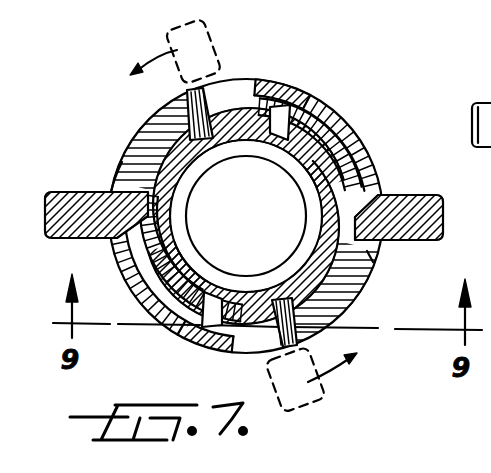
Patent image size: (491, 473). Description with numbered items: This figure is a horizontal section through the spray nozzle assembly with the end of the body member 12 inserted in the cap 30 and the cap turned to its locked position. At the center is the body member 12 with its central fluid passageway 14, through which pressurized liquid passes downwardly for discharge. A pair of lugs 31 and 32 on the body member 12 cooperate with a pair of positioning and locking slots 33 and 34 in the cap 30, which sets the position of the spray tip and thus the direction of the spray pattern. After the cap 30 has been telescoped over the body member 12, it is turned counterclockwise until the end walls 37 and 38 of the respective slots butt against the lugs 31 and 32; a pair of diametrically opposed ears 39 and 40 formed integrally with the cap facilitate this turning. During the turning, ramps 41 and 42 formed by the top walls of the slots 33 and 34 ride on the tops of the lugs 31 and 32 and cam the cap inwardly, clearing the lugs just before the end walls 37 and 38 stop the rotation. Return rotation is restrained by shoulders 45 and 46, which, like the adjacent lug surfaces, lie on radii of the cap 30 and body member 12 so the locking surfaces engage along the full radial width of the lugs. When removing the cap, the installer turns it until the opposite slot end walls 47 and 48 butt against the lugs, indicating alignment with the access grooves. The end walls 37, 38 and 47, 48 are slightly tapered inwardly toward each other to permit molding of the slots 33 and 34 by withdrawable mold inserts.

The main body member 12 is at (345, 126).
The central fluid passageway 14 is at (358, 163).
The cap 30 is at (332, 101).
The lug 31 is at (240, 82).
The lug 32 is at (240, 356).
The positioning and locking slot 33 is at (143, 137).
The positioning and locking slot 34 is at (343, 287).
The slot end wall 37 is at (284, 74).
The slot end wall 38 is at (220, 355).
The ear 39 is at (90, 245).
The ear 40 is at (446, 206).
The ramp 41 is at (180, 118).
The ramp 42 is at (312, 305).
The shoulder 45 is at (214, 92).
The shoulder 46 is at (314, 335).
The slot end wall 47 is at (120, 170).
The slot end wall 48 is at (370, 258).